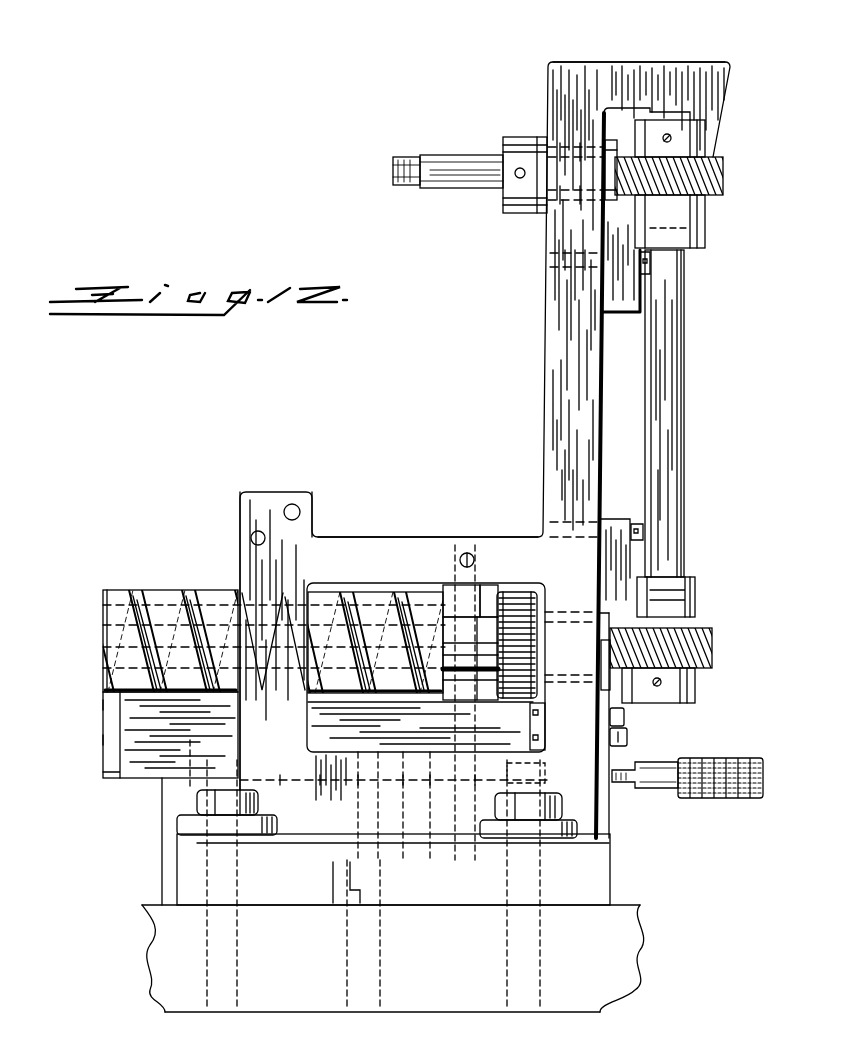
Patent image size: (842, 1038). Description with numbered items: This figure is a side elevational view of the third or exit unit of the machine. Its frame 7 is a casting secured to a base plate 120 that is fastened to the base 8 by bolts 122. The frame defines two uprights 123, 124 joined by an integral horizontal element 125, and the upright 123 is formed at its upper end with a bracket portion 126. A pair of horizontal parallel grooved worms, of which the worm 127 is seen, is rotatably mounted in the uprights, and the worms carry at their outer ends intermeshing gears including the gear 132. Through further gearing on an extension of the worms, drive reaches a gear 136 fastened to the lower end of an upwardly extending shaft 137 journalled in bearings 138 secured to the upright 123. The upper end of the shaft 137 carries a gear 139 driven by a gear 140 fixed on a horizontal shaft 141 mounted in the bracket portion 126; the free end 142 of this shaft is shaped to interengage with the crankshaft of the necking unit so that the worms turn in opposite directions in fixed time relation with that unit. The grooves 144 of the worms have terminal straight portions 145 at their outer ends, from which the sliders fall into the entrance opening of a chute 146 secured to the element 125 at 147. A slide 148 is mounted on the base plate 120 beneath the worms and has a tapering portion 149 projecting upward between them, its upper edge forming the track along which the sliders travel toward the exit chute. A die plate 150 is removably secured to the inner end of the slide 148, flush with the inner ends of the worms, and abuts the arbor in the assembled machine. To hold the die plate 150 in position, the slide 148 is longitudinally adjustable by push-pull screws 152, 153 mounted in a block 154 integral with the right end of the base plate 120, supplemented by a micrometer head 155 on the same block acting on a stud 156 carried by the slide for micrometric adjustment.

The frame 7 is at (616, 886).
The base 8 is at (607, 960).
The base plate 120 is at (187, 867).
The bolts 122 is at (223, 802).
The upright 123 is at (568, 394).
The upright 124 is at (268, 490).
The horizontal element 125 is at (357, 555).
The bracket portion 126 is at (598, 72).
The worm 127 is at (155, 590).
The gear 132 is at (520, 592).
The gear 136 is at (712, 648).
The shaft 137 is at (665, 450).
The bearings 138 is at (705, 240).
The gear 139 is at (727, 176).
The gear 140 is at (705, 220).
The horizontal shaft 141 is at (450, 165).
The free end 142 is at (400, 158).
The grooves 144 is at (185, 590).
The terminal straight portions 145 is at (440, 583).
The chute 146 is at (472, 595).
The securing point 147 is at (470, 552).
The slide 148 is at (150, 765).
The tapering portion 149 is at (106, 712).
The die plate 150 is at (110, 740).
The push-pull screw 152 is at (625, 718).
The push-pull screw 153 is at (628, 738).
The block 154 is at (600, 822).
The micrometer head 155 is at (712, 800).
The stud 156 is at (548, 782).